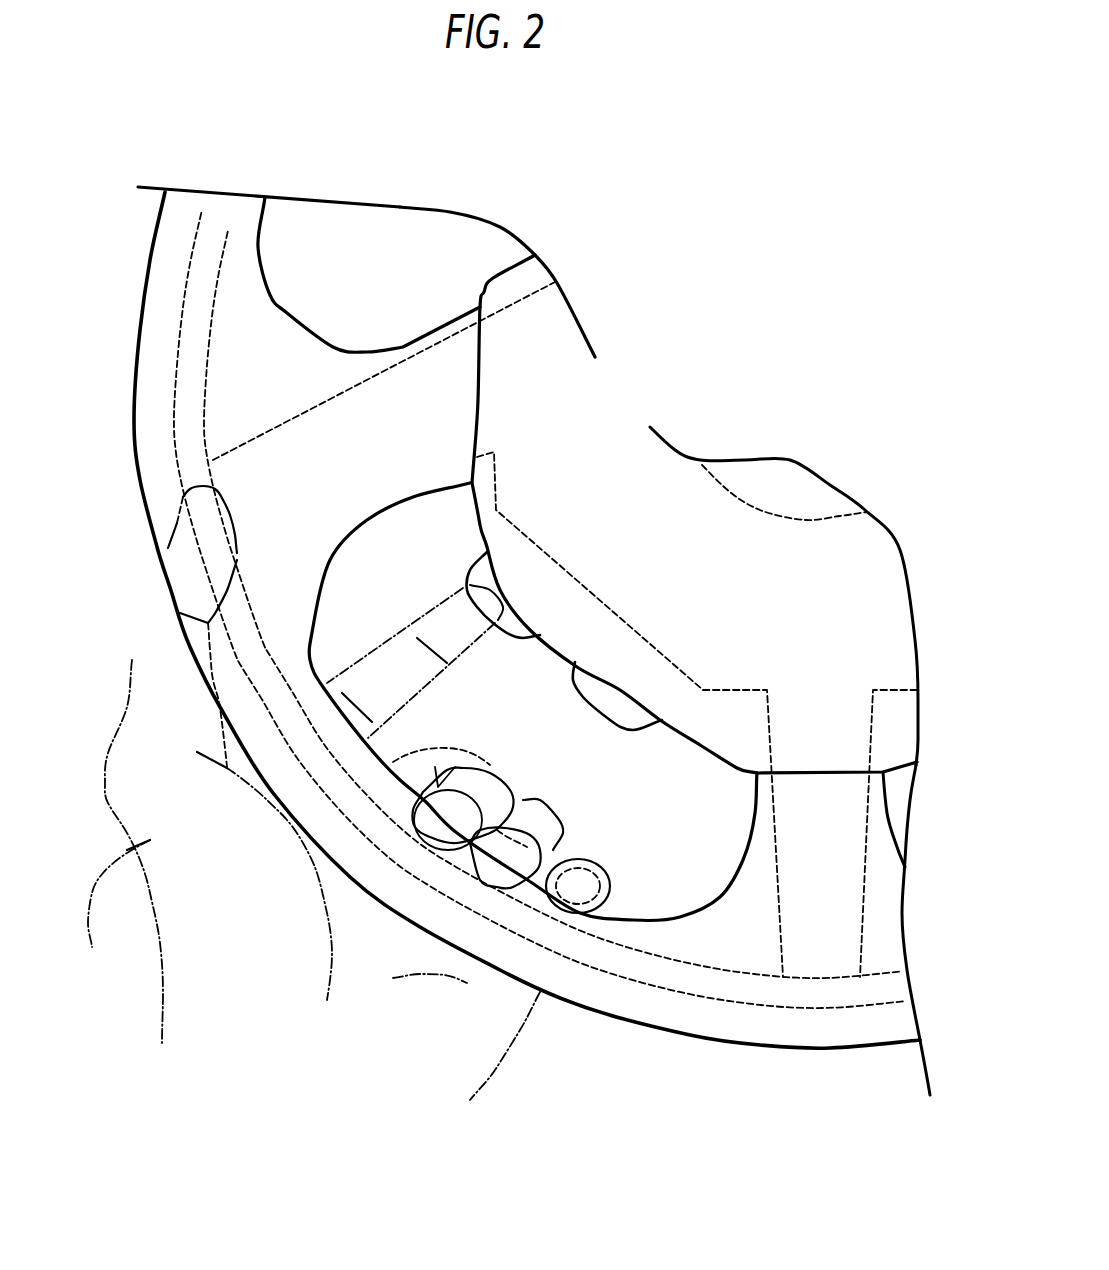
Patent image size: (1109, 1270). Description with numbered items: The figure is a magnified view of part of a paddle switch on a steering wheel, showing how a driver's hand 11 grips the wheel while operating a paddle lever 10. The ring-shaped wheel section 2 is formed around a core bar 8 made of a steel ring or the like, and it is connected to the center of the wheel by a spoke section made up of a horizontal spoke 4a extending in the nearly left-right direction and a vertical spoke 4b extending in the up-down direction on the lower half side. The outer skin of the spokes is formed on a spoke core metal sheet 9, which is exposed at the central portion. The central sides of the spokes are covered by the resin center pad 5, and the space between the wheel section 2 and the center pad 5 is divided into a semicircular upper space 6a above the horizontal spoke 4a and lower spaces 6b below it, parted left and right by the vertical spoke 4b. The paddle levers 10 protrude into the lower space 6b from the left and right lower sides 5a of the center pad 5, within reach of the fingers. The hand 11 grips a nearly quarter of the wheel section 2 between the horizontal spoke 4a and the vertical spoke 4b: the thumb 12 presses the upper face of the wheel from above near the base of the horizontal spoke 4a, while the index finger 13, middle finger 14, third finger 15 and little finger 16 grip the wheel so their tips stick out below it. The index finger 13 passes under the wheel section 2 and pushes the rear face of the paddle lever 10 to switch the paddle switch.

The wheel section 2 is at (137, 313).
The horizontal spoke 4a is at (406, 348).
The vertical spoke 4b is at (835, 908).
The center pad 5 is at (570, 337).
The lower side of the center pad 5a is at (553, 637).
The upper space 6a is at (420, 227).
The lower space 6b is at (655, 900).
The core bar 8 is at (187, 422).
The spoke core metal sheet 9 is at (533, 293).
The paddle lever 10 is at (517, 637).
The hand 11 is at (311, 880).
The thumb 12 is at (178, 567).
The index finger 13 is at (455, 605).
The middle finger 14 is at (487, 770).
The third finger 15 is at (555, 821).
The little finger 16 is at (597, 858).